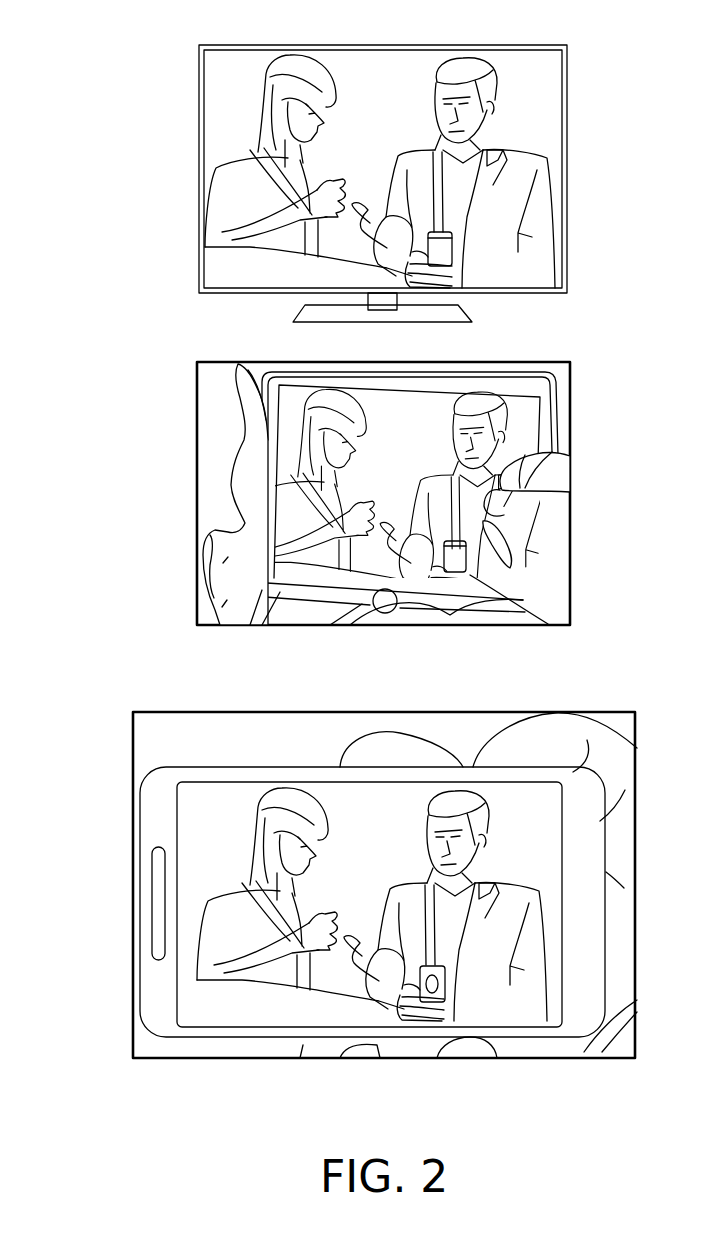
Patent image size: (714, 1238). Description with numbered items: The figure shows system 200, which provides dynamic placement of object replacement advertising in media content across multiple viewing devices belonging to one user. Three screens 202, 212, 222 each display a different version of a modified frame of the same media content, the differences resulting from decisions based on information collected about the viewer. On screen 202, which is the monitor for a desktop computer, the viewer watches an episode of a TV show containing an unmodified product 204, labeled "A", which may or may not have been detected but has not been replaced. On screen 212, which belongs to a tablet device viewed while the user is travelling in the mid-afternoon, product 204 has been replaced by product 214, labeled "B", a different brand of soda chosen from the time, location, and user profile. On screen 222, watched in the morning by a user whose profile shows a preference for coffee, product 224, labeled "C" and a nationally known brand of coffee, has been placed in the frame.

The system 200 is at (400, 1117).
The screen 202 is at (202, 173).
The product 204 is at (452, 262).
The screen 212 is at (197, 482).
The product 214 is at (465, 559).
The screen 222 is at (132, 852).
The product 224 is at (445, 990).